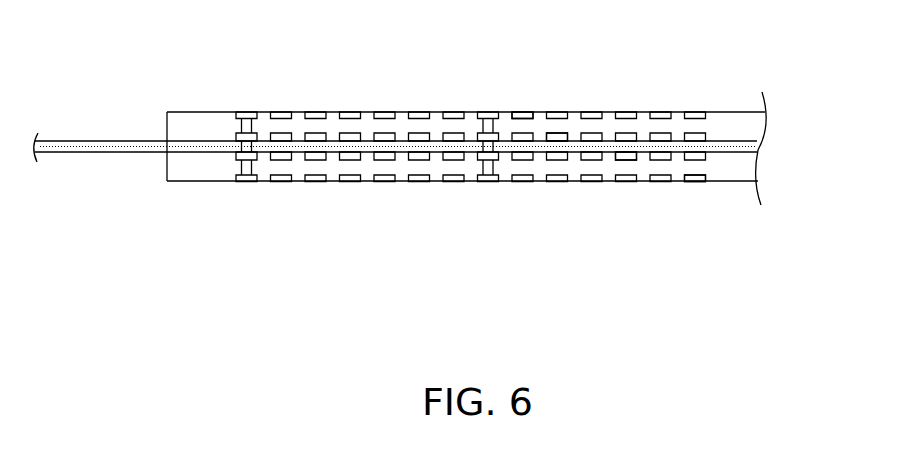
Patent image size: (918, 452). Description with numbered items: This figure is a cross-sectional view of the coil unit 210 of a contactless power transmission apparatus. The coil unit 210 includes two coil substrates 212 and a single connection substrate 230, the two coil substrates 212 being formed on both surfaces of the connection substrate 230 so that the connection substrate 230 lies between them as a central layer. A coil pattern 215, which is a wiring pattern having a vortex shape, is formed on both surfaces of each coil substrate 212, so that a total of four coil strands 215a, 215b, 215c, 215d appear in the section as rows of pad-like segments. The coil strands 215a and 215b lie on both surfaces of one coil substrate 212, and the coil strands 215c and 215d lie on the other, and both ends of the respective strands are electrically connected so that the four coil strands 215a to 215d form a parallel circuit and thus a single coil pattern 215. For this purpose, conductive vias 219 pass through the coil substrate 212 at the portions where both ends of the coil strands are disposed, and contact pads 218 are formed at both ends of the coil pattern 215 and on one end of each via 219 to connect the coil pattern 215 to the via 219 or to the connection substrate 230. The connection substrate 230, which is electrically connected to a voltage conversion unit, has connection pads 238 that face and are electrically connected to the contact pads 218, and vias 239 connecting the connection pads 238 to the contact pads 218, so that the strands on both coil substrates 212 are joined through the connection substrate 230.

The coil unit 210 is at (835, 108).
The coil substrate 212 is at (752, 125).
The connection substrate 230 is at (752, 147).
The coil pattern 215 is at (768, 58).
The first coil strand 215a is at (519, 112).
The second coil strand 215b is at (557, 133).
The third coil strand 215c is at (628, 155).
The fourth coil strand 215d is at (695, 178).
The contact pad 218 is at (252, 147).
The via 219 is at (250, 128).
The connection pad 238 is at (242, 128).
The via 239 is at (489, 147).